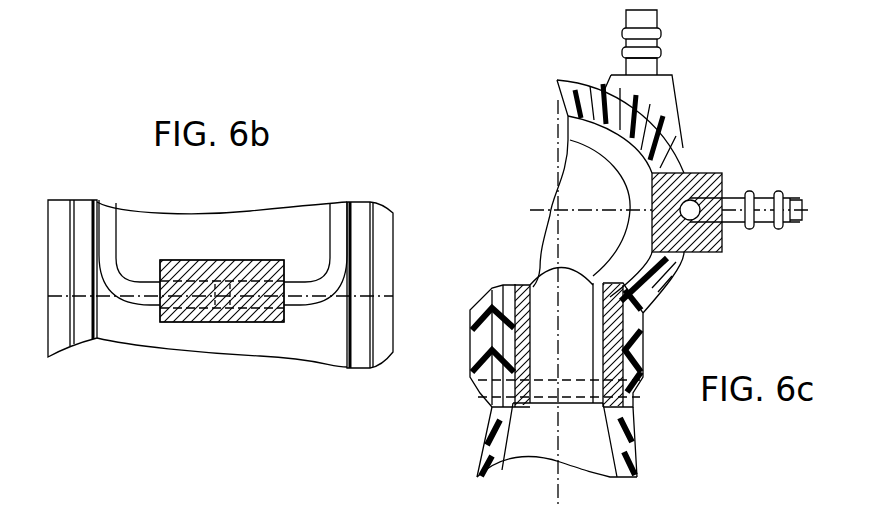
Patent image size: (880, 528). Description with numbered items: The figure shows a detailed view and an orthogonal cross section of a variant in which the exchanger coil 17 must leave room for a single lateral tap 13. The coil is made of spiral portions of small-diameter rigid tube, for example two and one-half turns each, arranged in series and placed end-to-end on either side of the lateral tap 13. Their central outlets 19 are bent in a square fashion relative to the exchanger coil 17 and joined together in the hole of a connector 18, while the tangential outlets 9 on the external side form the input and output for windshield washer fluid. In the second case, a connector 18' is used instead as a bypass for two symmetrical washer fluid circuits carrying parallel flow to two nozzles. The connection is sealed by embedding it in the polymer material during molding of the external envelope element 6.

In FIG. 6b, the exchanger coil 17 is at (57, 338).
In FIG. 6b, the central outlets 19 is at (128, 262).
In FIG. 6b, the connector 18 is at (222, 327).
In FIG. 6c, the tangential outlet 9 is at (647, 69).
In FIG. 6c, the connector 18' is at (727, 195).
In FIG. 6c, the external envelope element 6 is at (657, 283).
In FIG. 6c, the lateral tap 13 is at (567, 390).